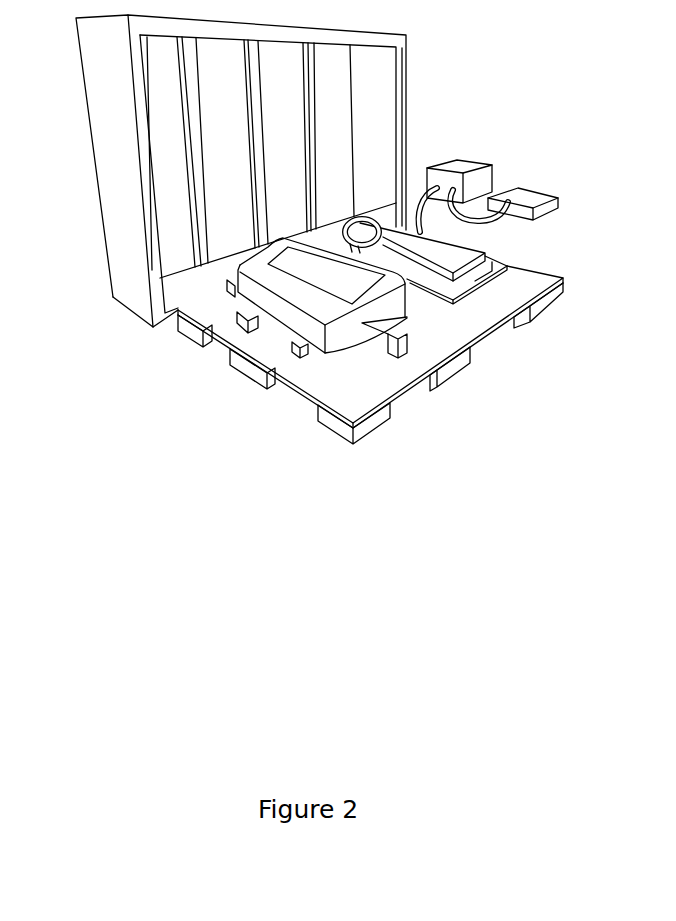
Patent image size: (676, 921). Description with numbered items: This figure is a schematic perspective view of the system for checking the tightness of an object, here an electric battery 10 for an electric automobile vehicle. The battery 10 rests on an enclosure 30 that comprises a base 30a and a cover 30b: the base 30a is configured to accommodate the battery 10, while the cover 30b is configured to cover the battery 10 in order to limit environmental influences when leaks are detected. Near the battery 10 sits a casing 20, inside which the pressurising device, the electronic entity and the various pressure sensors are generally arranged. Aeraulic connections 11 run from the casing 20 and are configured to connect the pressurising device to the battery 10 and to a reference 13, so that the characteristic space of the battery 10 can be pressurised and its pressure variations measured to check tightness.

The electric battery 10 is at (468, 275).
The aeraulic connections 11 is at (436, 229).
The reference 13 is at (541, 184).
The casing 20 is at (458, 167).
The enclosure 30 is at (296, 229).
The base 30a is at (381, 417).
The cover 30b is at (93, 143).